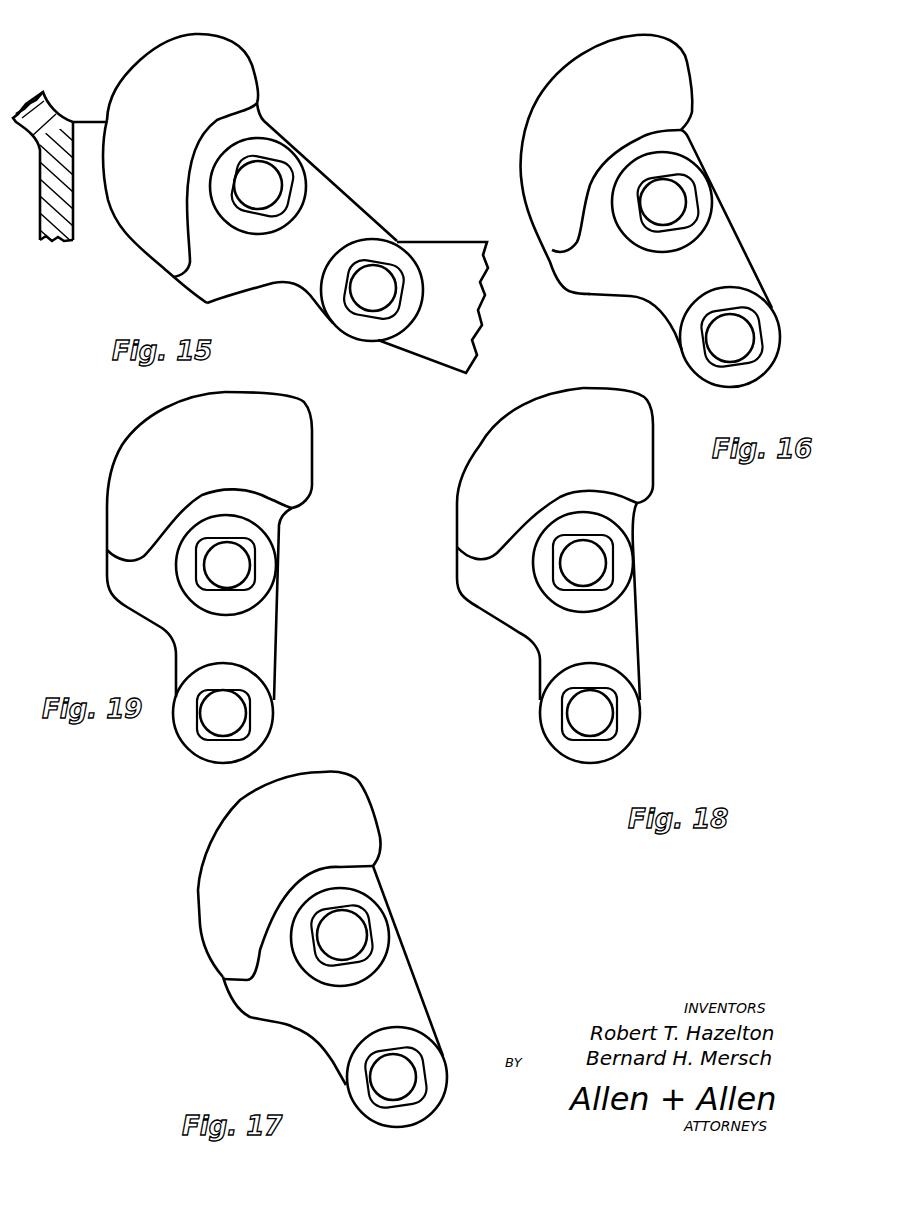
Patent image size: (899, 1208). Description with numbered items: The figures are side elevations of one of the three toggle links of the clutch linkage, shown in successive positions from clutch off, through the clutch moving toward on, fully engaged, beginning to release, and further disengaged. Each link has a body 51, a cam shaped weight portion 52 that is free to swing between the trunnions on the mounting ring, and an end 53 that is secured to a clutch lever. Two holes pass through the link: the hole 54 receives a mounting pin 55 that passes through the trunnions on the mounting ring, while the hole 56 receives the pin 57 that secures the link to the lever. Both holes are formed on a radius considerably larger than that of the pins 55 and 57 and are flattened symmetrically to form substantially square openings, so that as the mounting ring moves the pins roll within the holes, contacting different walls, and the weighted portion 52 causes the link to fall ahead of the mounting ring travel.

In FIG. 15, the link body 51 is at (338, 222).
In FIG. 16, the link body 51 is at (720, 238).
In FIG. 19, the link body 51 is at (267, 610).
In FIG. 18, the link body 51 is at (620, 517).
In FIG. 17, the link body 51 is at (388, 1000).
In FIG. 15, the cam shaped weight portion 52 is at (200, 82).
In FIG. 16, the cam shaped weight portion 52 is at (547, 135).
In FIG. 19, the cam shaped weight portion 52 is at (287, 453).
In FIG. 18, the cam shaped weight portion 52 is at (520, 443).
In FIG. 17, the cam shaped weight portion 52 is at (335, 808).
In FIG. 15, the link end 53 is at (387, 339).
In FIG. 16, the link end 53 is at (763, 325).
In FIG. 19, the link end 53 is at (263, 707).
In FIG. 18, the link end 53 is at (625, 715).
In FIG. 17, the link end 53 is at (430, 1063).
In FIG. 15, the mounting pin hole 54 is at (235, 188).
In FIG. 16, the mounting pin hole 54 is at (642, 197).
In FIG. 19, the mounting pin hole 54 is at (205, 540).
In FIG. 18, the mounting pin hole 54 is at (583, 563).
In FIG. 17, the mounting pin hole 54 is at (330, 963).
In FIG. 15, the mounting pin 55 is at (267, 183).
In FIG. 16, the mounting pin 55 is at (670, 197).
In FIG. 19, the mounting pin 55 is at (237, 563).
In FIG. 18, the mounting pin 55 is at (637, 563).
In FIG. 17, the mounting pin 55 is at (342, 935).
In FIG. 15, the lever pin hole 56 is at (397, 283).
In FIG. 16, the lever pin hole 56 is at (760, 347).
In FIG. 19, the lever pin hole 56 is at (243, 737).
In FIG. 18, the lever pin hole 56 is at (613, 735).
In FIG. 17, the lever pin hole 56 is at (413, 1052).
In FIG. 15, the lever pin 57 is at (377, 286).
In FIG. 16, the lever pin 57 is at (723, 337).
In FIG. 19, the lever pin 57 is at (223, 730).
In FIG. 18, the lever pin 57 is at (580, 713).
In FIG. 17, the lever pin 57 is at (398, 1073).